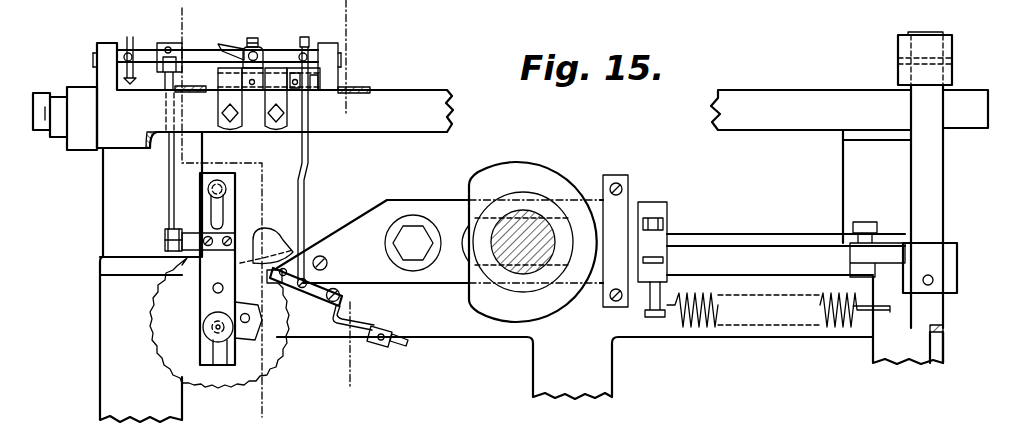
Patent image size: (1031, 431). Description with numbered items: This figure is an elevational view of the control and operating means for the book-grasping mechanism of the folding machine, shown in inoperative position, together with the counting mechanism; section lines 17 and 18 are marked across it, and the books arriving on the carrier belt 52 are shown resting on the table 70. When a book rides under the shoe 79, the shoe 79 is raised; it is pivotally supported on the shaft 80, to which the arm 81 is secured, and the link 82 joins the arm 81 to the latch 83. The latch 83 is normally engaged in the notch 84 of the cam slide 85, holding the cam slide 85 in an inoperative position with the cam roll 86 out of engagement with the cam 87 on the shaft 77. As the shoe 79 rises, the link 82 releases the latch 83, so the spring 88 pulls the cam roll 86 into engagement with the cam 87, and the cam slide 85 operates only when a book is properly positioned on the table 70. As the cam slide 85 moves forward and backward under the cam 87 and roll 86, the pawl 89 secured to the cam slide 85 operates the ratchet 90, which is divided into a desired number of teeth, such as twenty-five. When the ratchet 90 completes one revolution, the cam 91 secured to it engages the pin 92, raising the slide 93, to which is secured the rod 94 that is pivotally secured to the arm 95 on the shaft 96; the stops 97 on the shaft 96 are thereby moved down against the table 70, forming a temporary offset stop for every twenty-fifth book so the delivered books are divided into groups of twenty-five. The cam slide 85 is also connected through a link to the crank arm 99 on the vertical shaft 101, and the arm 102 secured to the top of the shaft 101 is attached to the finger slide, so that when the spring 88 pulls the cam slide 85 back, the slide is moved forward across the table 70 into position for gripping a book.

The section line 17 is at (200, 17).
The section line 18 is at (370, 17).
The carrier belt 52 is at (75, 95).
The table 70 is at (780, 102).
The shaft 77 is at (528, 222).
The shoe 79 is at (222, 44).
The shaft 80 is at (311, 78).
The arm 81 is at (311, 78).
The link 82 is at (306, 194).
The latch 83 is at (318, 291).
The notch 84 is at (268, 263).
The cam slide 85 is at (386, 266).
The cam roll 86 is at (414, 218).
The cam 87 is at (500, 176).
The spring 88 is at (710, 326).
The pawl 89 is at (282, 253).
The ratchet 90 is at (172, 352).
The cam 91 is at (248, 361).
The pin 92 is at (213, 288).
The slide 93 is at (230, 207).
The rod 94 is at (170, 193).
The arm 95 is at (168, 68).
The shaft 96 is at (273, 55).
The stops 97 is at (130, 82).
The crank arm 99 is at (886, 253).
The vertical shaft 101 is at (942, 193).
The arm 102 is at (952, 77).